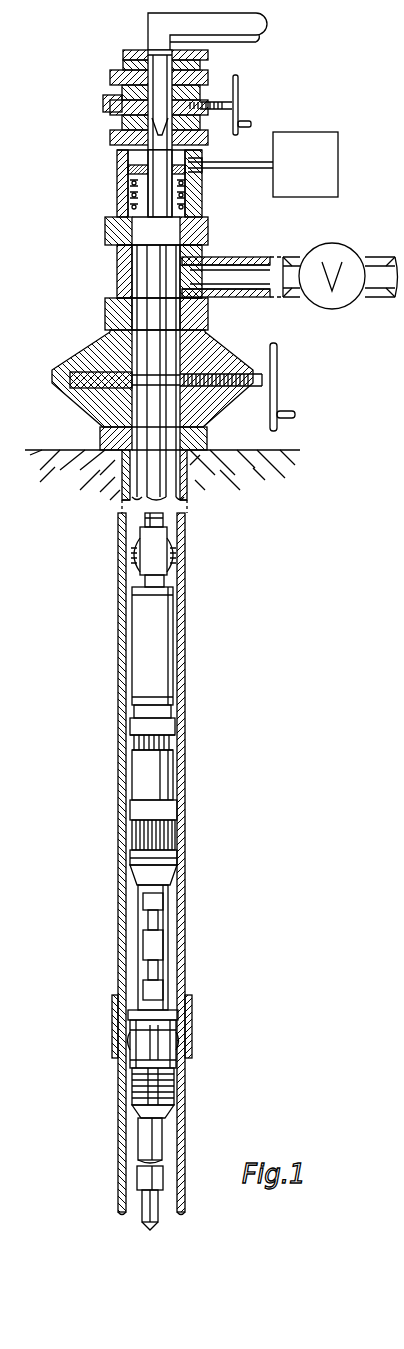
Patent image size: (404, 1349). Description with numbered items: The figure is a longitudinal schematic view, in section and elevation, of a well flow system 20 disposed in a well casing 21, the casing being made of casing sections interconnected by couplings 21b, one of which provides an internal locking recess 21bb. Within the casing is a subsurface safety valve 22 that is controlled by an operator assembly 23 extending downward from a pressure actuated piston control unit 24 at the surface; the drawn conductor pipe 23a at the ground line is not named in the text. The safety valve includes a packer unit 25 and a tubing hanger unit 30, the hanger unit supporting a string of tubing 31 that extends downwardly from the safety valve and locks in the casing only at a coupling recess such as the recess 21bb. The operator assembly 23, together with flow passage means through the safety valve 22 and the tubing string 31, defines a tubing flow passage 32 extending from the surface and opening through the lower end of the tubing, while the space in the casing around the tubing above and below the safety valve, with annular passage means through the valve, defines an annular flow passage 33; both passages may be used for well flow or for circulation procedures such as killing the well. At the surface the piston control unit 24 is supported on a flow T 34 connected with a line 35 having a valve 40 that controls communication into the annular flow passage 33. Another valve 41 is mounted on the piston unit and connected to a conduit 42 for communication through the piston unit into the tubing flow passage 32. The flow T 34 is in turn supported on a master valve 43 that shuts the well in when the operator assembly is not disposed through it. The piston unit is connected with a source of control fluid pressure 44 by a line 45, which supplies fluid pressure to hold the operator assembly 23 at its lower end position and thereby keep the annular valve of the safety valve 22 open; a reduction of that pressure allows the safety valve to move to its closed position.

The well flow system 20 is at (78, 446).
The well casing 21 is at (187, 597).
The coupling 21b is at (190, 1005).
The recess 21bb is at (120, 1036).
The subsurface safety valve 22 is at (98, 692).
The operator assembly 23 is at (172, 524).
The conductor pipe 23a is at (188, 480).
The pressure actuated piston control unit 24 is at (117, 184).
The packer unit 25 is at (140, 772).
The tubing hanger unit 30 is at (128, 1046).
The string of tubing 31 is at (142, 1205).
The tubing flow passage 32 is at (172, 1228).
The annular flow passage 33 is at (168, 1130).
The flow T 34 is at (117, 275).
The line 35 is at (250, 258).
The valve 40 is at (338, 243).
The valve 41 is at (103, 100).
The conduit 42 is at (176, 20).
The master valve 43 is at (74, 360).
The source of control fluid pressure 44 is at (328, 137).
The line 45 is at (246, 168).